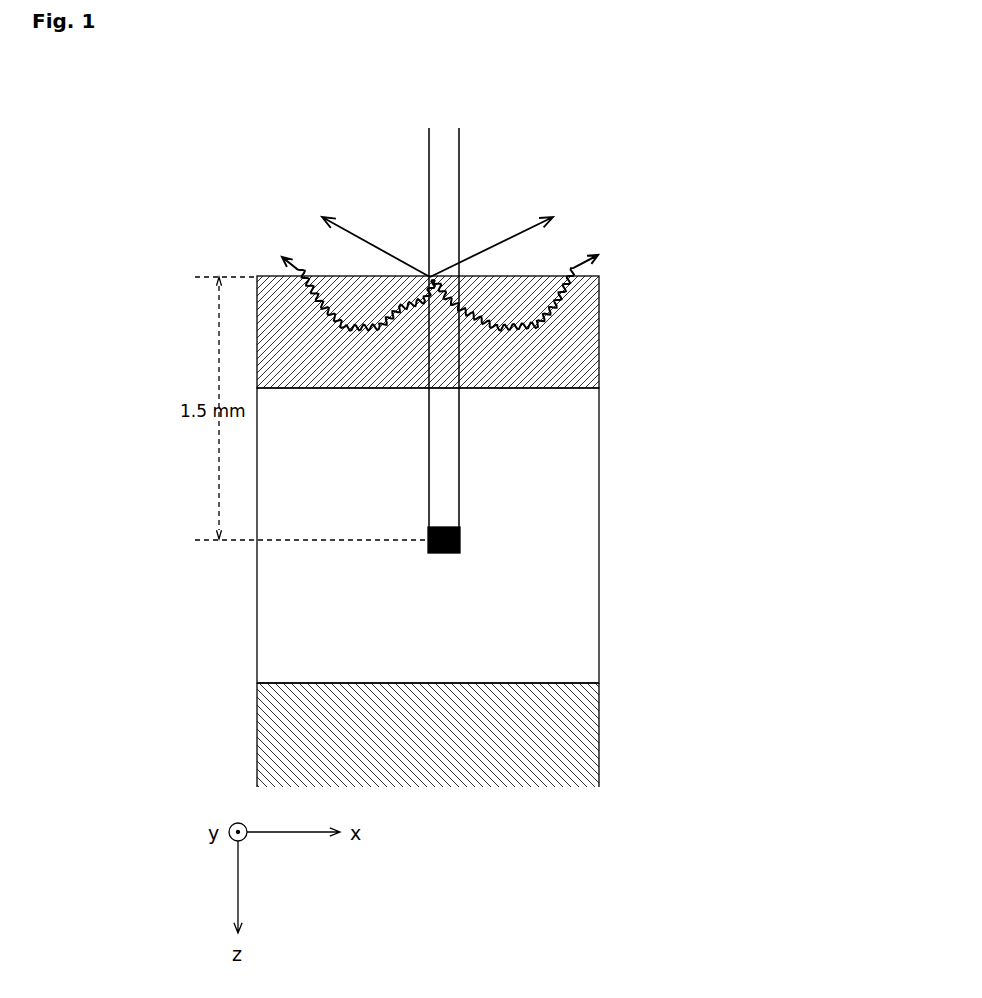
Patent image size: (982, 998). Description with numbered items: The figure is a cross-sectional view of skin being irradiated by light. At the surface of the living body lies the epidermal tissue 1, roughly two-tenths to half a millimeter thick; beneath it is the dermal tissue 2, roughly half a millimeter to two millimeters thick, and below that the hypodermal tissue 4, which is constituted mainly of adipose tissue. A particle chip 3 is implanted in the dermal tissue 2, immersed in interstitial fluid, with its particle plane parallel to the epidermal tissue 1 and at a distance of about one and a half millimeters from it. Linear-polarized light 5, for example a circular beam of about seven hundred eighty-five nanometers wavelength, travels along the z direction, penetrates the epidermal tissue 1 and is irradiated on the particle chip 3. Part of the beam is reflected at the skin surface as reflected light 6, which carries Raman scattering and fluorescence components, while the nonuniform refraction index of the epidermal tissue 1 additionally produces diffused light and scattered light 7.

The epidermal tissue 1 is at (637, 278).
The dermal tissue 2 is at (636, 385).
The particle chip 3 is at (427, 552).
The hypodermal tissue 4 is at (637, 687).
The linear-polarized light 5 is at (445, 132).
The reflected light 6 is at (373, 242).
The diffused light and scattered light 7 is at (308, 277).